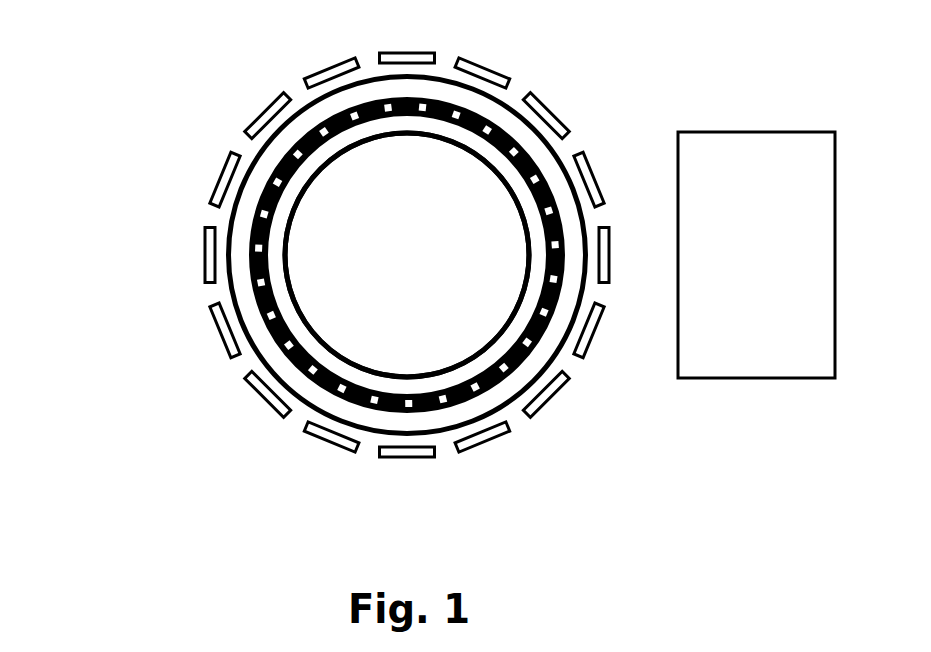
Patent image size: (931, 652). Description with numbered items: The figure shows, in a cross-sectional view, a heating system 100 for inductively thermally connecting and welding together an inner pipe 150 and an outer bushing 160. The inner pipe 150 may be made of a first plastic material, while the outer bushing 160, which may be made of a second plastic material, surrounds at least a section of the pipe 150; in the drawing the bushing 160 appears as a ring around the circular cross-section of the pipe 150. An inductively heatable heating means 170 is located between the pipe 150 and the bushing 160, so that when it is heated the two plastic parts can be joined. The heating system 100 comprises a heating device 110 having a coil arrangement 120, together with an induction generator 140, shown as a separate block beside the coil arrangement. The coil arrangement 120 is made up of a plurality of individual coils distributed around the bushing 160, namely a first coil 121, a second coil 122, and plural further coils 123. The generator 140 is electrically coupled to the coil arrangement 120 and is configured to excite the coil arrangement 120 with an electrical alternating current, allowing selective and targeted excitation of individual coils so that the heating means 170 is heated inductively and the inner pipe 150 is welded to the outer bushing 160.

The heating system 100 is at (438, 245).
The heating device 110 is at (188, 79).
The coil arrangement 120 is at (407, 231).
The first coil 121 is at (415, 52).
The second coil 122 is at (479, 63).
The further coils 123 is at (531, 95).
The induction generator 140 is at (777, 269).
The inner pipe 150 is at (545, 250).
The outer bushing 160 is at (243, 218).
The inductively heatable heating means 170 is at (484, 140).